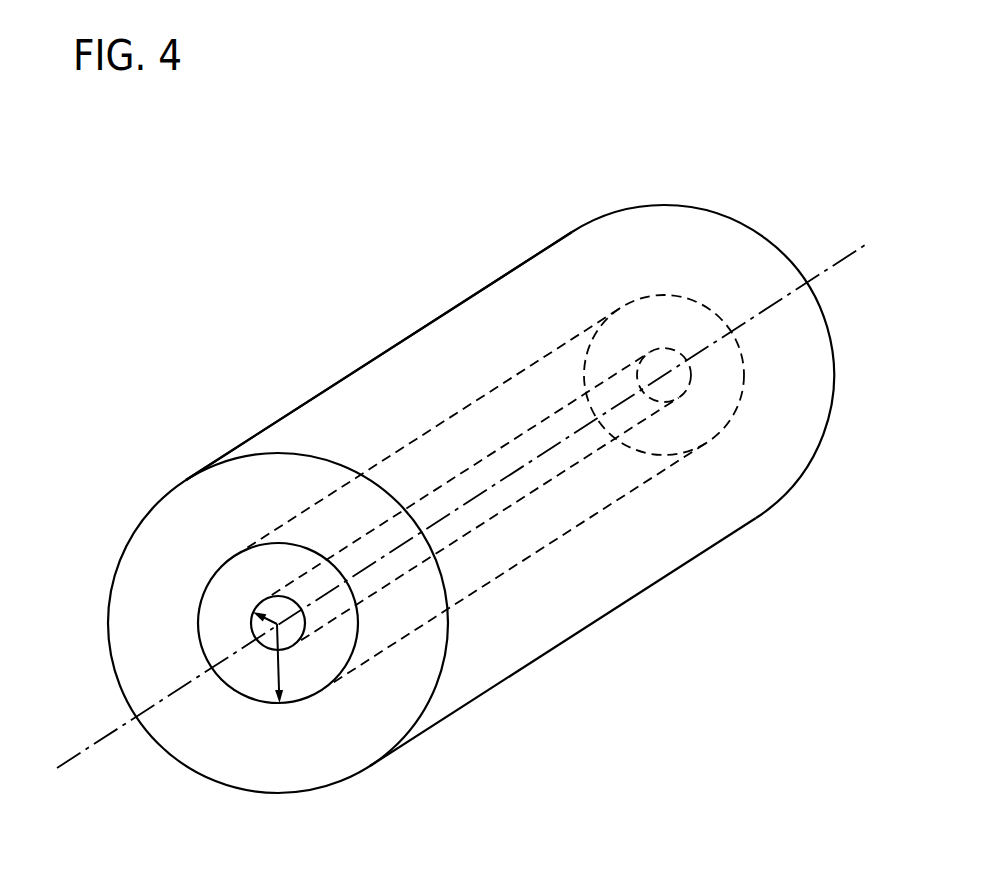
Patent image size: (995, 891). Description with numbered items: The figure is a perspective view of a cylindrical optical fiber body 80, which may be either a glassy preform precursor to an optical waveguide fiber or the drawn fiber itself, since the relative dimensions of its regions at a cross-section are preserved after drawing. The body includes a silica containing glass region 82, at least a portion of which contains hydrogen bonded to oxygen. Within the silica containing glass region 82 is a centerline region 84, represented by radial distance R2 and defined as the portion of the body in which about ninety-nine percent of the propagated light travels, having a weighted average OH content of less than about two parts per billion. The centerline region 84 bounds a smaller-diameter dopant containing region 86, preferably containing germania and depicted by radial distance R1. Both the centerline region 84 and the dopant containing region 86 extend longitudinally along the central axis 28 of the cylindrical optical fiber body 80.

The cylindrical optical fiber body 80 is at (386, 165).
The silica containing glass region 82 is at (373, 402).
The centerline region 84 is at (333, 650).
The dopant containing region 86 is at (268, 648).
The central axis 28 is at (100, 741).
The radial distance R1 is at (263, 607).
The radial distance R2 is at (283, 671).